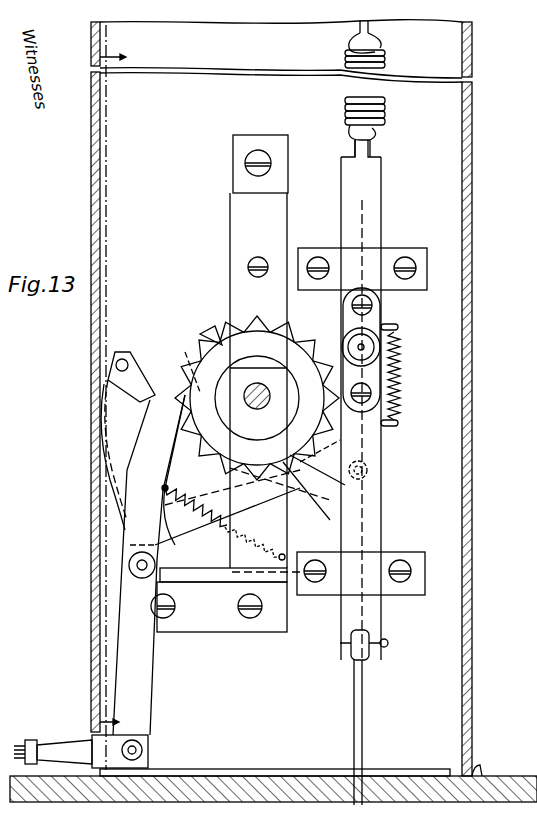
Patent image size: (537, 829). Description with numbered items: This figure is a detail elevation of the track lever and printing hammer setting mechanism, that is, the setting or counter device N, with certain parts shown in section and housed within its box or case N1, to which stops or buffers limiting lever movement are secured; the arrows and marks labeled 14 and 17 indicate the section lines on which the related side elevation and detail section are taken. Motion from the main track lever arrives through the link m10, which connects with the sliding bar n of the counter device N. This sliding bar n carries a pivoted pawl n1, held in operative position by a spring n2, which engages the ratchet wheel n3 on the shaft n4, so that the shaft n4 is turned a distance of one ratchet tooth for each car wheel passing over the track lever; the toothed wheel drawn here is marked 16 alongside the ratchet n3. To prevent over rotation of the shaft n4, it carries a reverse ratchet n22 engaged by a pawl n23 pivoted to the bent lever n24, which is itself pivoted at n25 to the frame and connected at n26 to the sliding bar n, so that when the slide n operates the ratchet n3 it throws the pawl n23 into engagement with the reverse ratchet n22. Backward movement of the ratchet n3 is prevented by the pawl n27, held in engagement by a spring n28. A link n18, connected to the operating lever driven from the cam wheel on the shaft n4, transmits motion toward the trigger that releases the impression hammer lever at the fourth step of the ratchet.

The track lever and printing hammer lever counter or setting device N is at (273, 411).
The box or case N1 is at (92, 88).
The direction arrow / plate 14 is at (111, 397).
The sliding bar n is at (277, 350).
The lever / bar 17 is at (367, 225).
The ratchet wheel 16 is at (257, 398).
The shaft n4 is at (257, 408).
The pivoted pawl n1 is at (361, 360).
The spring n2 is at (400, 372).
The ratchet wheel n3 is at (320, 451).
The reverse ratchet n22 is at (198, 341).
The pawl n23 is at (176, 371).
The bent lever n24 is at (242, 520).
The pivot n25 is at (140, 560).
The connection n26 is at (372, 475).
The pawl n27 is at (175, 420).
The spring n28 is at (194, 502).
The link n18 is at (18, 745).
The link m10 is at (365, 737).